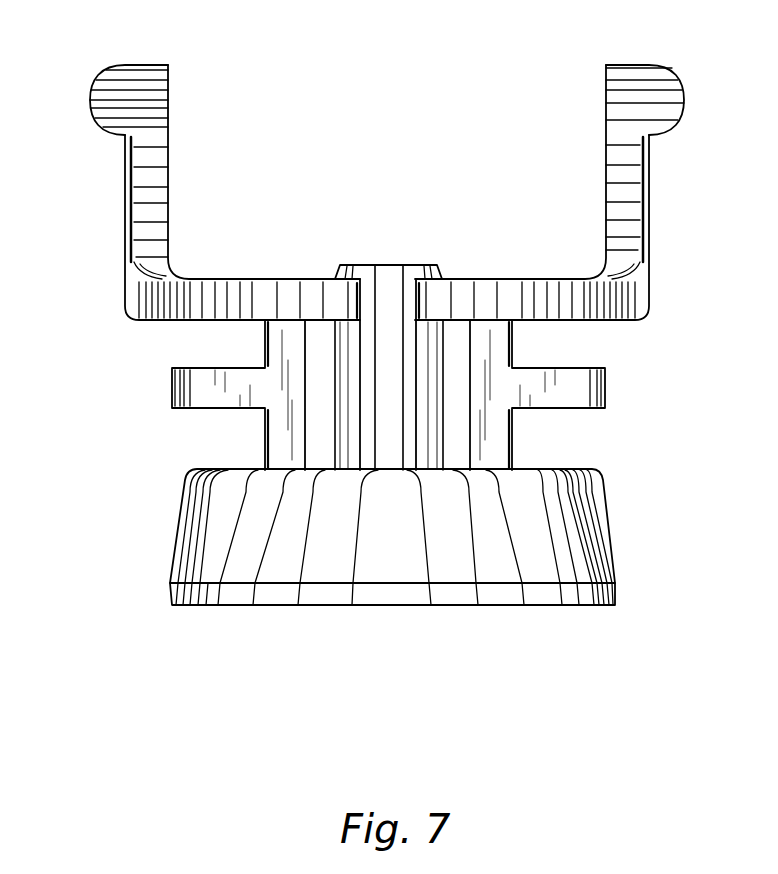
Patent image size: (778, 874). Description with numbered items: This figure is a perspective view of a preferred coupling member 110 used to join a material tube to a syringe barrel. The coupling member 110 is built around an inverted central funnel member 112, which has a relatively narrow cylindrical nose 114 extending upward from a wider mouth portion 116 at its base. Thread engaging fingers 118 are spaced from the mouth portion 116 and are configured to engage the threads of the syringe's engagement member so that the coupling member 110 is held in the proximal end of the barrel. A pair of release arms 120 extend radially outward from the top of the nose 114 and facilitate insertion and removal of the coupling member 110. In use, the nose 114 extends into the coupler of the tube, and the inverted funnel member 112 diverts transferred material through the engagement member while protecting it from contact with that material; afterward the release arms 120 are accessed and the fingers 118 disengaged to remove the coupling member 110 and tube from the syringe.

The coupling member 110 is at (90, 526).
The inverted central funnel member 112 is at (613, 580).
The cylindrical nose 114 is at (375, 265).
The mouth portion 116 is at (170, 578).
The thread engaging fingers 118 is at (208, 403).
The release arms 120 is at (92, 85).